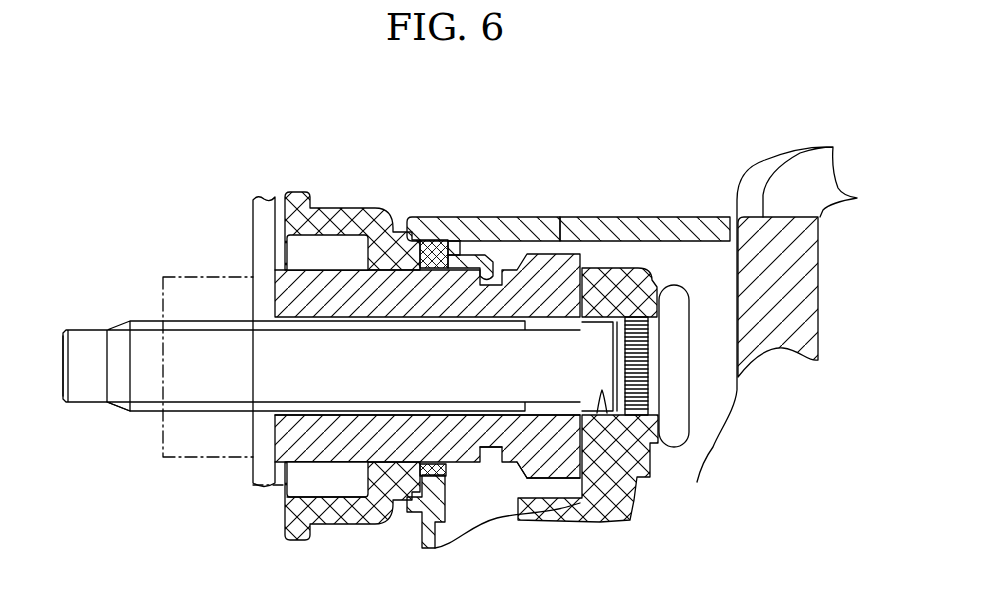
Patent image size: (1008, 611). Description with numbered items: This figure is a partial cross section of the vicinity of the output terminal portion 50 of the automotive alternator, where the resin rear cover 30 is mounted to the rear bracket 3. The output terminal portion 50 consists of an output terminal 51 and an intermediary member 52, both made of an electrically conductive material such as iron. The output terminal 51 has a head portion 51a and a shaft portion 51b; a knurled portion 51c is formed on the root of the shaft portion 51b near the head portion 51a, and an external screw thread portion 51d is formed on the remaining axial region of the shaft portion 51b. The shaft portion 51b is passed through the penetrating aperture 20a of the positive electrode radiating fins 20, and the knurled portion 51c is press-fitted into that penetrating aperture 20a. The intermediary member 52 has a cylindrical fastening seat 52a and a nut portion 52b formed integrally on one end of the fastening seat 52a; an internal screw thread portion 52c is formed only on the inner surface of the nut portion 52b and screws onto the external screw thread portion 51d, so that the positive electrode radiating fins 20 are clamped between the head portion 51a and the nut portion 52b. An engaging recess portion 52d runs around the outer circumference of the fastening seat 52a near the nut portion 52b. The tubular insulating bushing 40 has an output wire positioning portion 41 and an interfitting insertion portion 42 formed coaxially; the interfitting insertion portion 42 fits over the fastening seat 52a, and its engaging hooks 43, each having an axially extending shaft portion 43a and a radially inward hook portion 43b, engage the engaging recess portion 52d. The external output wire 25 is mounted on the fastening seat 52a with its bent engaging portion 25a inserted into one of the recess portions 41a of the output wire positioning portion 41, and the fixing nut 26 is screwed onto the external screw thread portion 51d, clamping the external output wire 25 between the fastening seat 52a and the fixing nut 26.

The rear bracket 3 is at (748, 190).
The positive electrode radiating fins 20 is at (603, 430).
The penetrating aperture 20a is at (604, 408).
The external output wire 25 is at (253, 482).
The engaging portion 25a is at (282, 515).
The fixing nut 26 is at (188, 435).
The rear cover 30 is at (632, 216).
The bushing 40 is at (345, 140).
The output wire positioning portion 41 is at (352, 365).
The recess portions 41a is at (332, 484).
The interfitting insertion portion 42 is at (437, 252).
The engaging hooks 43 is at (493, 333).
The shaft portion 43a is at (460, 262).
The hook portion 43b is at (489, 268).
The output terminal portion 50 is at (215, 189).
The output terminal 51 is at (433, 360).
The head portion 51a is at (680, 413).
The shaft portion 51b is at (95, 347).
The knurled portion 51c is at (612, 423).
The external screw thread portion 51d is at (152, 408).
The intermediary member 52 is at (378, 392).
The fastening seat 52a is at (398, 447).
The nut portion 52b is at (550, 472).
The internal screw thread portion 52c is at (526, 460).
The engaging recess portion 52d is at (497, 465).